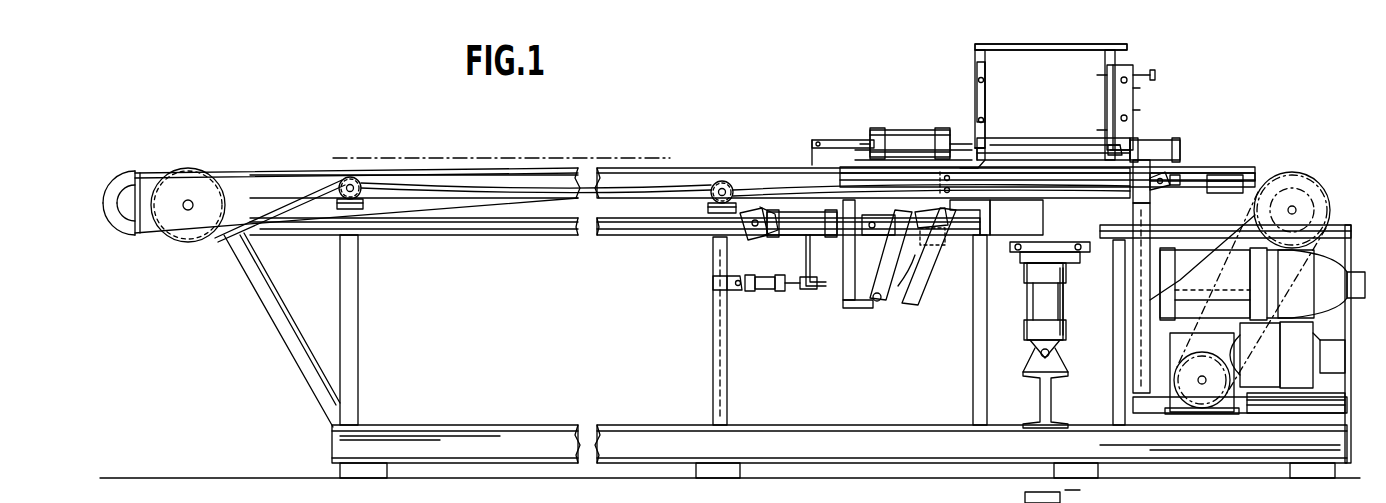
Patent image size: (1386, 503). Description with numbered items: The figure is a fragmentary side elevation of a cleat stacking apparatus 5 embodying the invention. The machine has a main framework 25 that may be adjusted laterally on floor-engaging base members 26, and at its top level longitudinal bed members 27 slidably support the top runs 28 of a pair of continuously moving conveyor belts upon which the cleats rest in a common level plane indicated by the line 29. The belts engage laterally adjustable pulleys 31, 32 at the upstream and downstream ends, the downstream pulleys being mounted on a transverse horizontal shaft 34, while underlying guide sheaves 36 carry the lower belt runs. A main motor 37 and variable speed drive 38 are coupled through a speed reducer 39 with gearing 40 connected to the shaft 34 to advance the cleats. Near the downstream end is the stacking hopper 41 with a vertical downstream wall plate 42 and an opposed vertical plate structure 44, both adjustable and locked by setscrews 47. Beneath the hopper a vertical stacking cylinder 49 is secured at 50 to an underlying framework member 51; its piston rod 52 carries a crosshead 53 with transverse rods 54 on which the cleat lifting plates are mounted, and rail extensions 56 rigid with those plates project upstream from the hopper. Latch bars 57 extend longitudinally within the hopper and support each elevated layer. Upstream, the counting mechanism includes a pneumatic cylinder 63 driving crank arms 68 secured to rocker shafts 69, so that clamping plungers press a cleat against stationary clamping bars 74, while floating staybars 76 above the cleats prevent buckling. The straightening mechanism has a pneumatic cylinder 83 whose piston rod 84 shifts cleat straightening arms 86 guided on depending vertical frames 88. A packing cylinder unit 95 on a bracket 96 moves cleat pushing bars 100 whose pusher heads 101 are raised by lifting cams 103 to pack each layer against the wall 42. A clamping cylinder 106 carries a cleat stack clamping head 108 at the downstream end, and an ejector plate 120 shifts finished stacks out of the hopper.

The feed apparatus 5 is at (972, 93).
The main framework 25 is at (360, 323).
The floor-engaging base members 26 is at (338, 470).
The longitudinal bed members 27 is at (532, 172).
The top runs of conveyor belts 28 is at (305, 168).
The common level plane line 29 is at (692, 168).
The upstream pulleys 31 is at (192, 238).
The downstream pulleys 32 is at (1321, 196).
The downstream pulley shaft 34 is at (1296, 208).
The guide sheaves 36 is at (730, 181).
The main motor 37 is at (1312, 352).
The variable speed drive 38 is at (1210, 296).
The speed reducer 39 is at (1178, 349).
The gearing 40 is at (1267, 316).
The stacking chamber or hopper 41 is at (978, 67).
The downstream wall plate 42 is at (1107, 100).
The vertical plate structure 44 is at (989, 100).
The setscrews 47 is at (1156, 75).
The stacking cylinder 49 is at (1032, 307).
The cylinder securement 50 is at (1040, 355).
The underlying framework member 51 is at (1051, 404).
The piston rod 52 is at (1064, 296).
The crosshead 53 is at (1032, 258).
The transverse horizontal rods 54 is at (1015, 250).
The rail extensions 56 is at (958, 215).
The latch bars 57 is at (1013, 160).
The pneumatic power cylinder 63 is at (774, 291).
The crank arms 68 is at (808, 257).
The rocker shafts 69 is at (818, 140).
The clamping bars 74 is at (888, 175).
The staybars 76 is at (924, 150).
The pneumatic power cylinder 83 is at (772, 226).
The piston rod 84 is at (885, 255).
The cleat straightening arms 86 is at (909, 300).
The depending vertical frames 88 is at (847, 302).
The power cylinder unit 95 is at (1229, 178).
The bracket 96 is at (1196, 174).
The cleat pushing bars 100 is at (1036, 185).
The cleat pusher heads 101 is at (966, 175).
The lifting cams 103 is at (977, 196).
The clamping cylinder 106 is at (1165, 145).
The cleat stack clamping head 108 is at (1112, 146).
The ejector plate 120 is at (1090, 50).